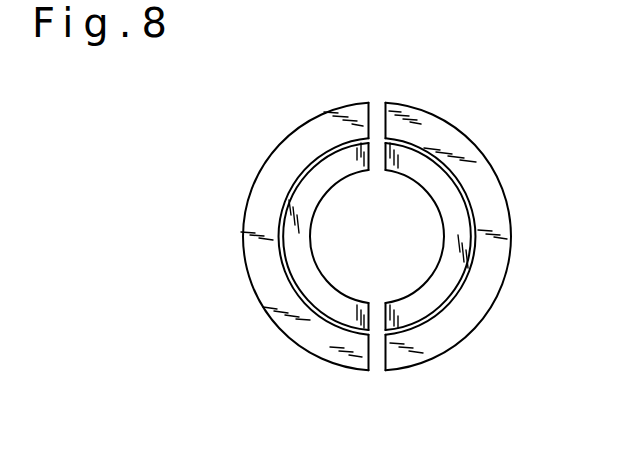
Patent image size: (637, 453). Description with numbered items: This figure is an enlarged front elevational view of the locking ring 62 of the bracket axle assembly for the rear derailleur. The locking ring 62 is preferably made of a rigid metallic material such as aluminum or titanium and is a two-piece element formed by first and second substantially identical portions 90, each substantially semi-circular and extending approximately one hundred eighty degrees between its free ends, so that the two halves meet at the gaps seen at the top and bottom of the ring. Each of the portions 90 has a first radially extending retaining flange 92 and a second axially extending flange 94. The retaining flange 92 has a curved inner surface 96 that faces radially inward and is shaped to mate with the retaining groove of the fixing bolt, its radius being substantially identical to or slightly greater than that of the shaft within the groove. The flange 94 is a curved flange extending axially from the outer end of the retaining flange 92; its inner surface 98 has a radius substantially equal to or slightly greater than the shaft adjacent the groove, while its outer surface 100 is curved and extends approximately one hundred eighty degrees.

The locking ring 62 is at (275, 122).
The first and second substantially identical portions 90 is at (390, 111).
The first radially extending retaining flange 92 is at (420, 168).
The second axially extending flange 94 is at (337, 360).
The curved inner surface 96 is at (443, 252).
The inner surface of flange 98 is at (417, 320).
The outer surface of flange 100 is at (498, 292).